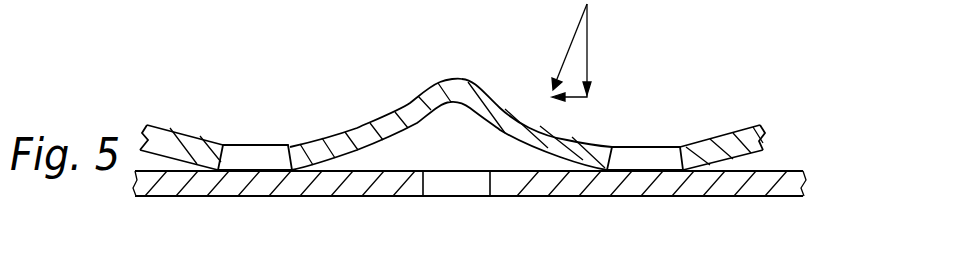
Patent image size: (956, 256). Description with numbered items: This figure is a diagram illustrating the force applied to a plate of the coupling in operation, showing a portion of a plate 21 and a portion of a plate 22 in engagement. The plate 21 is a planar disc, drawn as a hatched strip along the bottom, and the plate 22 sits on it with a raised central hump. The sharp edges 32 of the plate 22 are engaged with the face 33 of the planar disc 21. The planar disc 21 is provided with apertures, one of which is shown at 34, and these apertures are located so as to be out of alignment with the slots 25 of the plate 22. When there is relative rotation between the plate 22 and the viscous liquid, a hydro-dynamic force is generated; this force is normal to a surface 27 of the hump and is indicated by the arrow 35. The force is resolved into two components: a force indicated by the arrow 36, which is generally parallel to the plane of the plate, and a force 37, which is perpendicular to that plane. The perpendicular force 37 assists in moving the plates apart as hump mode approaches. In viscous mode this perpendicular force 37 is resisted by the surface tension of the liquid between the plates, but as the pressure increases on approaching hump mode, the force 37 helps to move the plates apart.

The plate 21 is at (475, 187).
The plate 22 is at (452, 116).
The slots 25 is at (253, 144).
The surface 27 is at (565, 137).
The sharp edges 32 is at (608, 172).
The face 33 is at (777, 172).
The aperture 34 is at (463, 189).
The arrow 35 is at (565, 60).
The arrow 36 is at (580, 97).
The force 37 is at (590, 38).